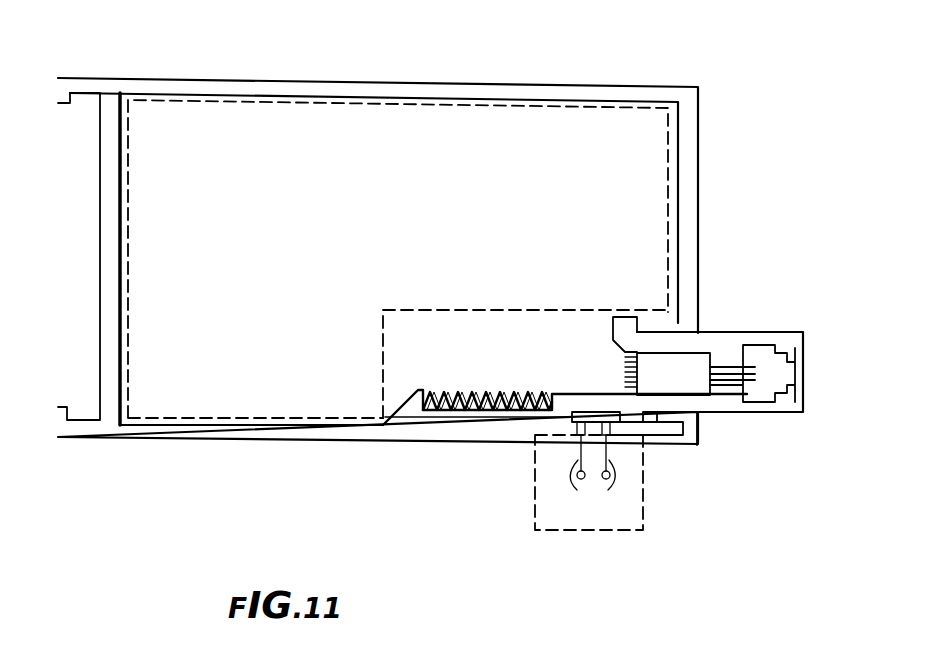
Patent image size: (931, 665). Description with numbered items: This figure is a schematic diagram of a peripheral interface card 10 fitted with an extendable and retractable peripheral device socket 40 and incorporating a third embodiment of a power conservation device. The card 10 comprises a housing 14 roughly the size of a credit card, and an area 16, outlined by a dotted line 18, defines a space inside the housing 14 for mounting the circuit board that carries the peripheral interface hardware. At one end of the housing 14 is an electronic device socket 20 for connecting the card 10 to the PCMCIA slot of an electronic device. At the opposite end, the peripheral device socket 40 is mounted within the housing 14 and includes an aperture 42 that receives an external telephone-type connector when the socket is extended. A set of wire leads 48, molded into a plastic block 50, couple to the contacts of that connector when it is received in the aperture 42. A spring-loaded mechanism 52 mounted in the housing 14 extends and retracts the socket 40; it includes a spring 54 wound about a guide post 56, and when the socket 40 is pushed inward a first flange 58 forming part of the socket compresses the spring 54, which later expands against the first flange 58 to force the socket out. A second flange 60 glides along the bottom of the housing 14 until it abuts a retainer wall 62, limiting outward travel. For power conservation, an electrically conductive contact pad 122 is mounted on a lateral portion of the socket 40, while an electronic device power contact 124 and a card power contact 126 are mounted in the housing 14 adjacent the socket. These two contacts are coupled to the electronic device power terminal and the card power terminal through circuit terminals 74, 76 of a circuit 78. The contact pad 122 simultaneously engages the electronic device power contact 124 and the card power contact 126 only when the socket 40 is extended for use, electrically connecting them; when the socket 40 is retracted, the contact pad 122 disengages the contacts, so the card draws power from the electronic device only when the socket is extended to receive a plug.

The peripheral interface card 10 is at (509, 76).
The housing 14 is at (425, 82).
The area 16 is at (297, 124).
The dotted line 18 is at (195, 102).
The electronic device socket 20 is at (62, 127).
The peripheral device socket 40 is at (780, 420).
The aperture 42 is at (780, 375).
The wire leads 48 is at (747, 384).
The plastic block 50 is at (700, 385).
The spring-loaded mechanism 52 is at (435, 424).
The spring 54 is at (520, 395).
The guide post 56 is at (455, 393).
The first flange 58 is at (633, 408).
The second flange 60 is at (627, 316).
The retainer wall 62 is at (648, 327).
The circuit terminal 74 is at (566, 474).
The circuit terminal 76 is at (616, 474).
The circuit 78 is at (565, 532).
The contact pad 122 is at (585, 410).
The electronic device power contact 124 is at (573, 427).
The card power contact 126 is at (610, 433).